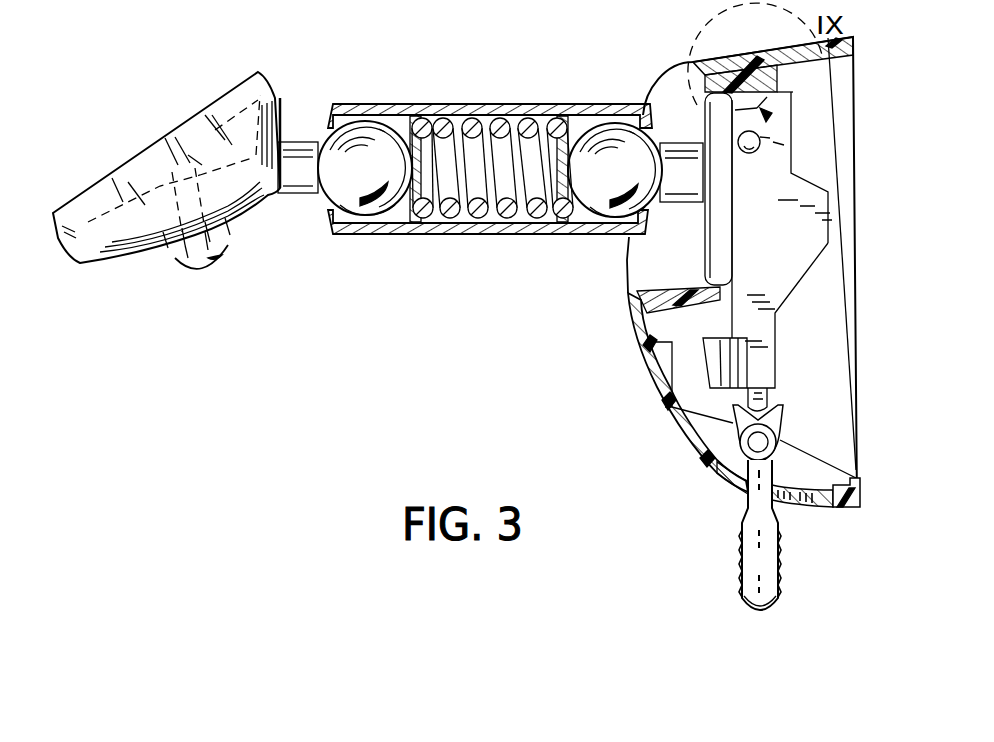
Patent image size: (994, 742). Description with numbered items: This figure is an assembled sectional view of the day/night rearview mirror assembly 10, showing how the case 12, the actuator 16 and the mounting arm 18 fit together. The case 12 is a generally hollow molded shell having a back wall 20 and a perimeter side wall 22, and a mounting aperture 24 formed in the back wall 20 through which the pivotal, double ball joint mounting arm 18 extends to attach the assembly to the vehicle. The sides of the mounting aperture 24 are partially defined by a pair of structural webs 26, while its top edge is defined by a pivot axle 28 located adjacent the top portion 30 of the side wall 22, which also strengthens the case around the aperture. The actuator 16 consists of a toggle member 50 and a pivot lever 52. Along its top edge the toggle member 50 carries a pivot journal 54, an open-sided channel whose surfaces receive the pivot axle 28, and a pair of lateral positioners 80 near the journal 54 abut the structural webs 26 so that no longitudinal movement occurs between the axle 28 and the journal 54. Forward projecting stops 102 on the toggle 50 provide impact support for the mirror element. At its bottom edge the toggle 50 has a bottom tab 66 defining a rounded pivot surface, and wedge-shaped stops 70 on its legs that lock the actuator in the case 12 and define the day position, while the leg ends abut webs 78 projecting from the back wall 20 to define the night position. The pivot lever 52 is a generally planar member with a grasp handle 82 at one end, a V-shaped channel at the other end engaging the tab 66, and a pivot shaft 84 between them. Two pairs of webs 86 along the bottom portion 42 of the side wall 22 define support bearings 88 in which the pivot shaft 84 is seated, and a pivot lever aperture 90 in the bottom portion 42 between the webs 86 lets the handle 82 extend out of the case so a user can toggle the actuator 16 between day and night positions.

The day/night rearview mirror assembly 10 is at (382, 412).
The case 12 is at (661, 72).
The actuator 16 is at (803, 269).
The mounting arm 18 is at (531, 76).
The back wall 20 is at (633, 324).
The perimeter side wall 22 is at (721, 480).
The mounting aperture 24 is at (641, 282).
The structural webs 26 is at (834, 156).
The pivot axle 28 is at (763, 95).
The top portion 30 is at (766, 60).
The bottom portion 42 is at (834, 507).
The toggle member 50 is at (840, 262).
The pivot lever 52 is at (731, 548).
The pivot journal 54 is at (760, 118).
The bottom tab 66 is at (757, 395).
The stops 70 is at (729, 341).
The webs 78 is at (659, 357).
The lateral positioners 80 is at (749, 153).
The grasp handle 82 is at (764, 602).
The pivot shaft 84 is at (781, 446).
The webs 86 is at (770, 404).
The support bearings 88 is at (736, 450).
The pivot lever aperture 90 is at (794, 510).
The forward projecting stops 102 is at (833, 212).